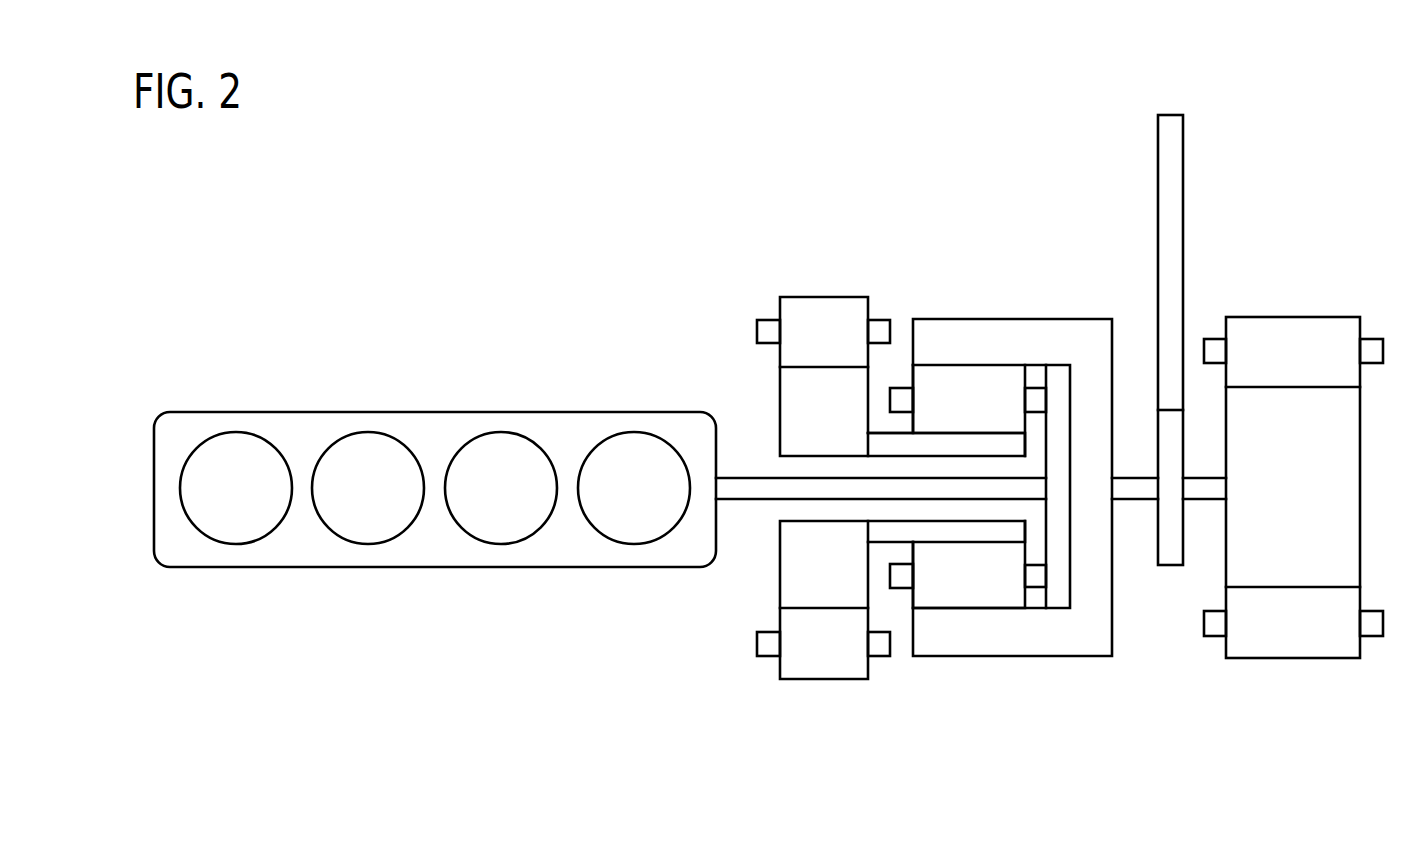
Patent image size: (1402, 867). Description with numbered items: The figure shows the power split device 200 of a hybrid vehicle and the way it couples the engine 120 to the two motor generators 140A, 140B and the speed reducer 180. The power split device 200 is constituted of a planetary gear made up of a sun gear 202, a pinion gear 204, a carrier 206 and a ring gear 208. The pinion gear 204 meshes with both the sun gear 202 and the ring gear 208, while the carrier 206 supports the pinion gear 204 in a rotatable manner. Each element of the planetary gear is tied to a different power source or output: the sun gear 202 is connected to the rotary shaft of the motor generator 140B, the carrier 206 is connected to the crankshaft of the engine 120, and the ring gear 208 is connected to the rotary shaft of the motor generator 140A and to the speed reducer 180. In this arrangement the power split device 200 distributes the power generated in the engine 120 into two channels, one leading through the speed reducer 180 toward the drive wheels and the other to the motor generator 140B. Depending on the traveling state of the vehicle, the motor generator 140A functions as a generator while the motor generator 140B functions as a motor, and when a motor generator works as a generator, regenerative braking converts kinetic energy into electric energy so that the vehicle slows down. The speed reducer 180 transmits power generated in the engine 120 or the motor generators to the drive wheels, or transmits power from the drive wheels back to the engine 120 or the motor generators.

The engine 120 is at (437, 412).
The motor generator 140A is at (1292, 317).
The motor generator 140B is at (826, 297).
The speed reducer 180 is at (1193, 92).
The power split device 200 is at (1006, 283).
The sun gear 202 is at (950, 543).
The pinion gear 204 is at (990, 610).
The carrier 206 is at (1043, 523).
The ring gear 208 is at (1068, 656).